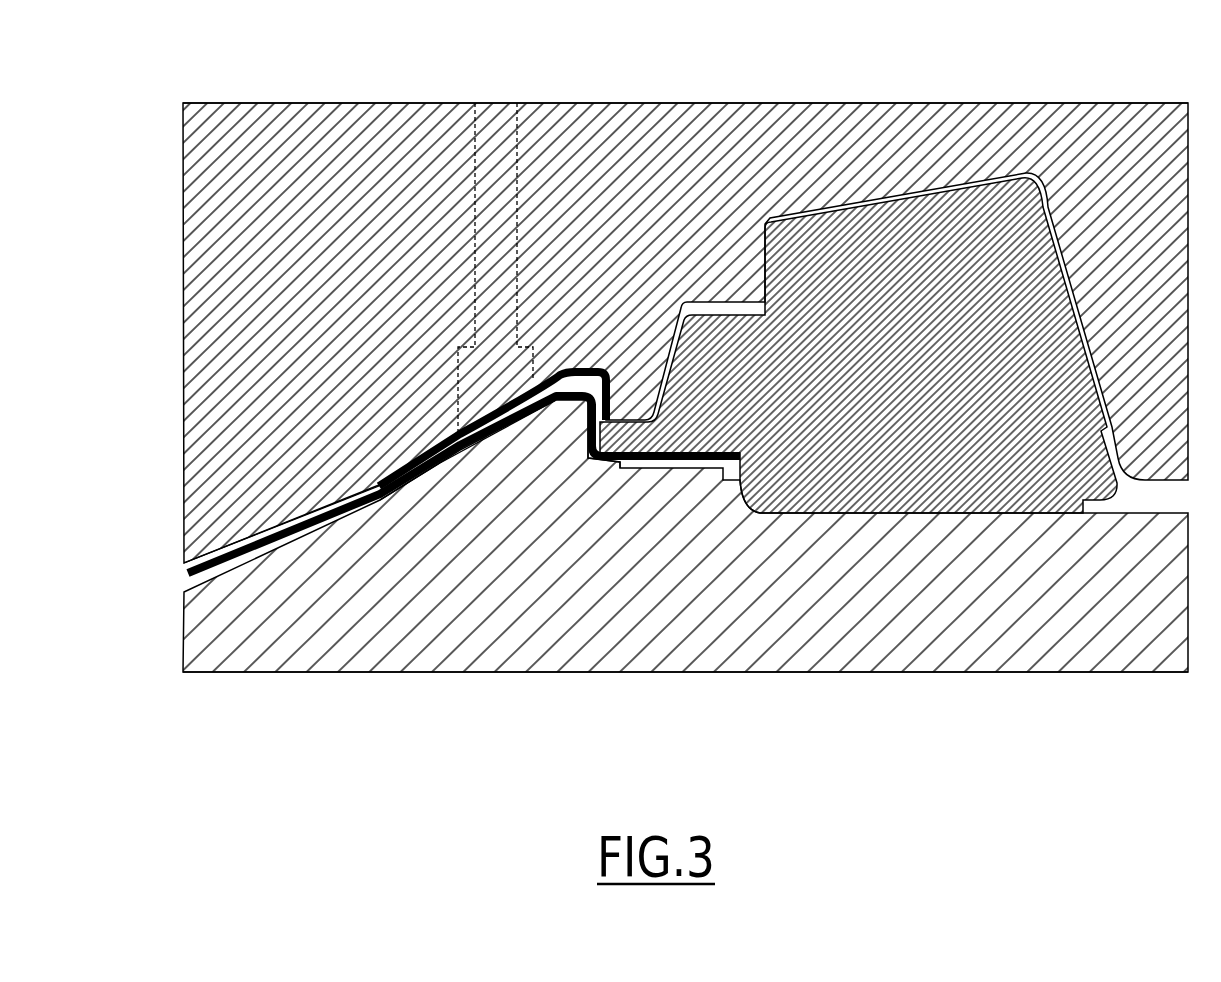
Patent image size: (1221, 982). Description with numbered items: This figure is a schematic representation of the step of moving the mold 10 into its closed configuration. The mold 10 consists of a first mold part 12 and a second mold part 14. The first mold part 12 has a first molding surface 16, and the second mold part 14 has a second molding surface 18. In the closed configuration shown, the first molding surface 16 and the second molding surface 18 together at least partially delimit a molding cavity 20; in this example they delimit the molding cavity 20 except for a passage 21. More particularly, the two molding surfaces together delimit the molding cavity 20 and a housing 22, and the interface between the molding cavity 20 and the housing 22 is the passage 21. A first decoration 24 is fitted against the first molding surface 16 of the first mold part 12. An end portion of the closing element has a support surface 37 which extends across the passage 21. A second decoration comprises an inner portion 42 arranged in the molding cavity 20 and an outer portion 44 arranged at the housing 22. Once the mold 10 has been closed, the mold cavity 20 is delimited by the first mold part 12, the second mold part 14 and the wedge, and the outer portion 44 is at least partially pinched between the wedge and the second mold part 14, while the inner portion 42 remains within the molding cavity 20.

The mold 10 is at (158, 278).
The first mold part 12 is at (220, 346).
The second mold part 14 is at (355, 604).
The first molding surface 16 is at (303, 516).
The second molding surface 18 is at (457, 470).
The molding cavity 20 is at (264, 538).
The passage 21 is at (612, 385).
The housing 22 is at (730, 302).
The first decoration 24 is at (565, 368).
The support surface 37 is at (593, 368).
The inner portion 42 is at (413, 496).
The outer portion 44 is at (580, 470).